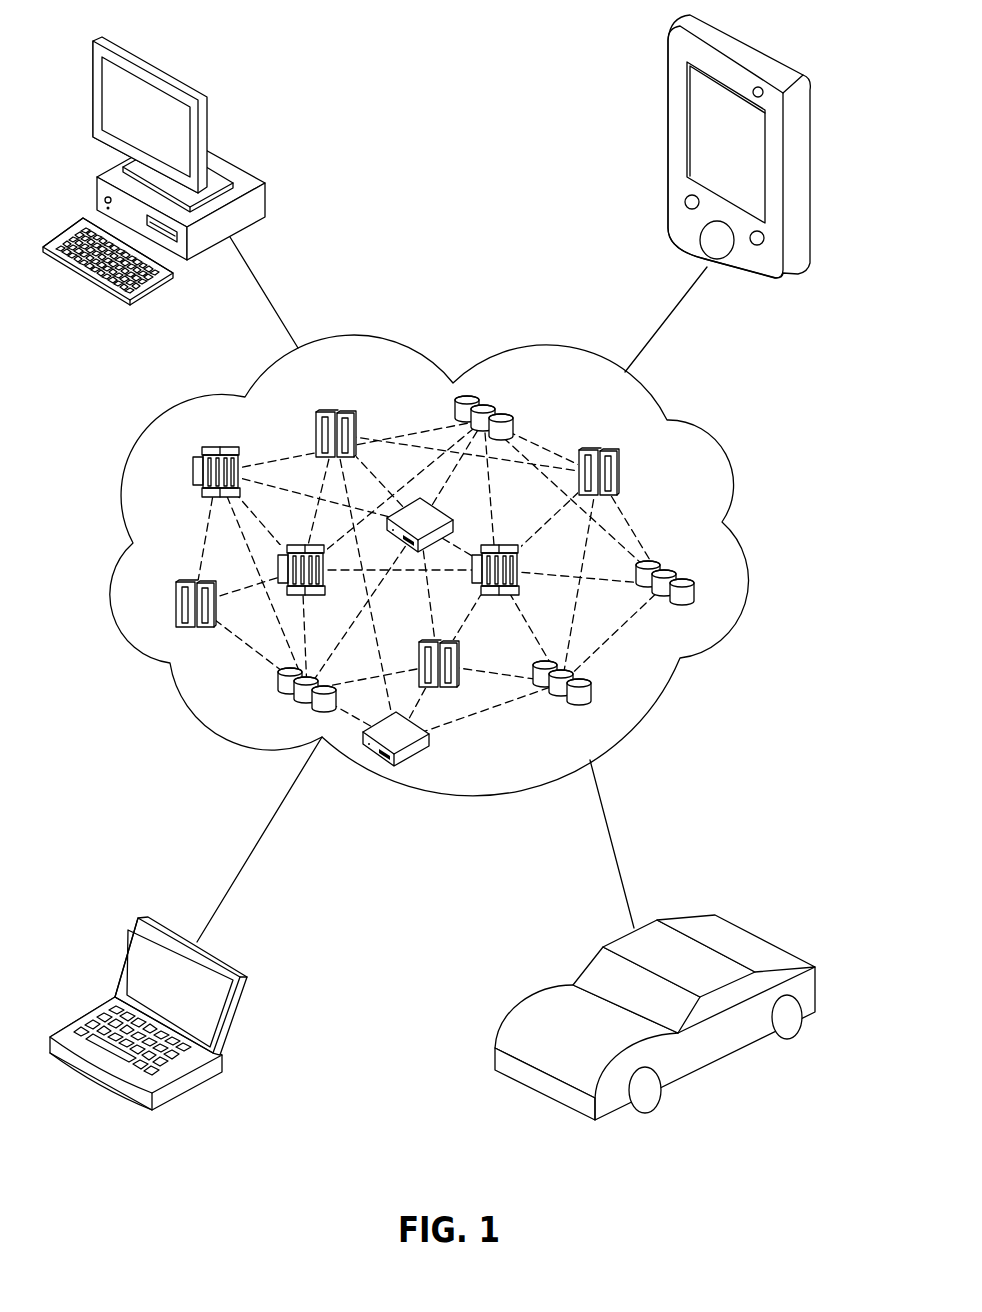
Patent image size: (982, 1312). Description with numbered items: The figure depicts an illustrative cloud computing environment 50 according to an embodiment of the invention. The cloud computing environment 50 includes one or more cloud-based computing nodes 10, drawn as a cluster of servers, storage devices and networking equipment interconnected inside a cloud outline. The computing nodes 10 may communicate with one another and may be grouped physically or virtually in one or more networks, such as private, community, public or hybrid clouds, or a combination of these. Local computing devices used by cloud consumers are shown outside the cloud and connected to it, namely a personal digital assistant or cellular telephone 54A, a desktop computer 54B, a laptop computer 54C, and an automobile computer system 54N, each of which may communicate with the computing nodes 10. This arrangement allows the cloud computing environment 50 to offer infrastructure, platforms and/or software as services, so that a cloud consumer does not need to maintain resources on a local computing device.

The cloud-based computing nodes 10 is at (668, 497).
The cloud computing environment 50 is at (723, 641).
The personal digital assistant (PDA) or cellular telephone 54A is at (668, 93).
The desktop computer 54B is at (265, 196).
The laptop computer 54C is at (248, 987).
The automobile computer system 54N is at (817, 985).